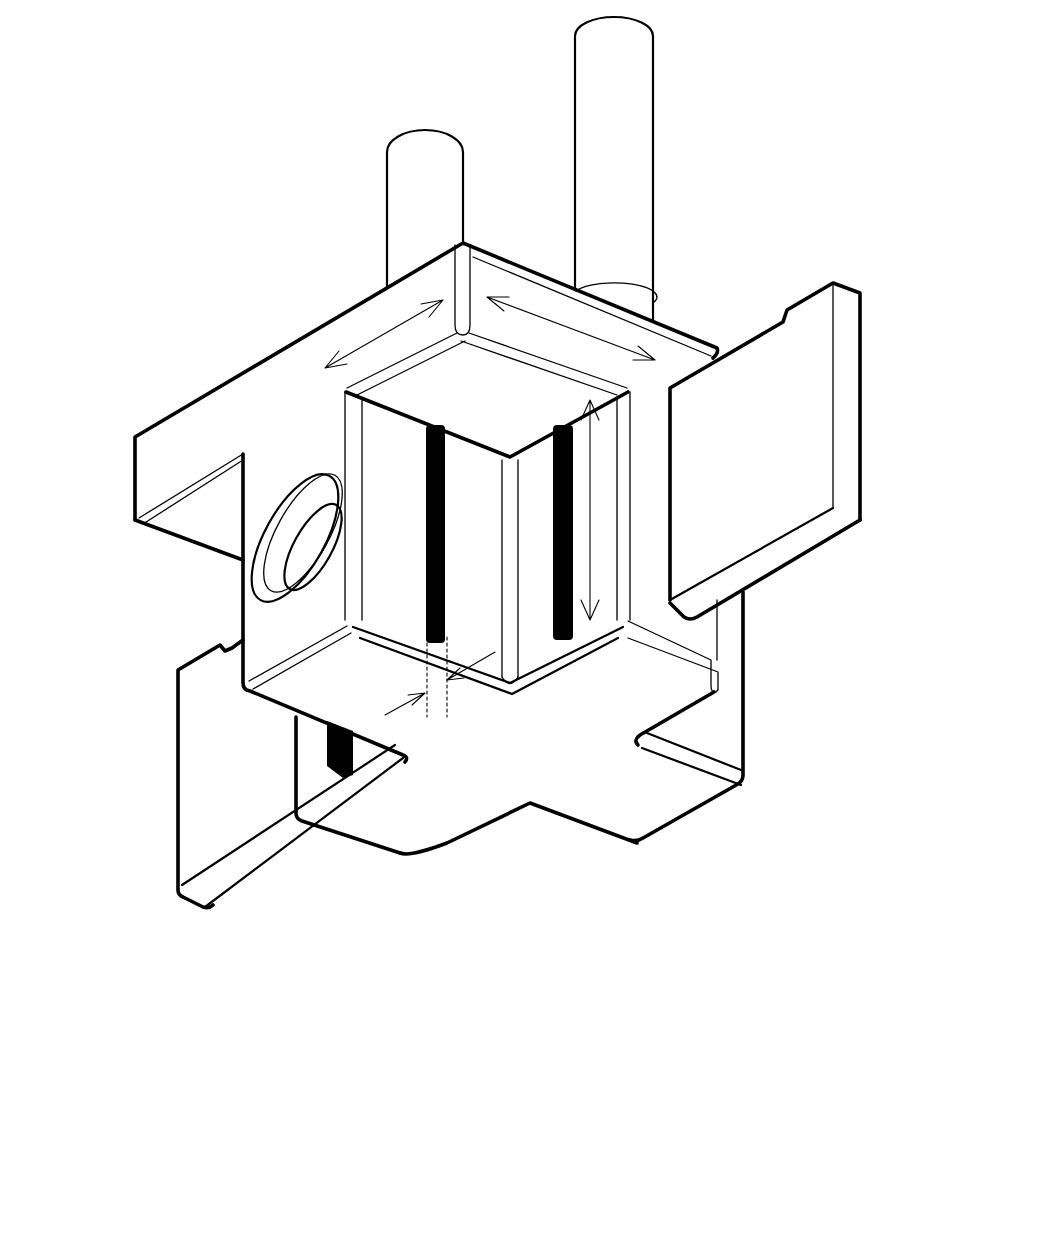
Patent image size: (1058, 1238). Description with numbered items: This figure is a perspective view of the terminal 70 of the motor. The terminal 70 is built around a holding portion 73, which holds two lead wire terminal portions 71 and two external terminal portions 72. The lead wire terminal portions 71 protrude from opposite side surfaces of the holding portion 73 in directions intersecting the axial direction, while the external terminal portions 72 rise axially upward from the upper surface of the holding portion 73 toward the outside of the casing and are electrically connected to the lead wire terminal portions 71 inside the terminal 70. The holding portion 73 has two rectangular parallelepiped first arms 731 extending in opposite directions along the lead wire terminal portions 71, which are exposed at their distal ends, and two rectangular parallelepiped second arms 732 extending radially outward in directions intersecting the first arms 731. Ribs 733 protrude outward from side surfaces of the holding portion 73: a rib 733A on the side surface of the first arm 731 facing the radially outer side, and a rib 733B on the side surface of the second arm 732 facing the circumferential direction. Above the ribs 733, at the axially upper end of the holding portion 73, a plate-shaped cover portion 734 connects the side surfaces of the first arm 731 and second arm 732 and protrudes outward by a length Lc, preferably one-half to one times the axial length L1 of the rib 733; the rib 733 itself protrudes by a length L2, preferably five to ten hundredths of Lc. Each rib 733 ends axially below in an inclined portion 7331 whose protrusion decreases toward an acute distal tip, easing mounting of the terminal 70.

The terminal 70 is at (216, 104).
The lead wire terminal portion 71 is at (176, 723).
The external terminal portion 72 is at (405, 128).
The holding portion 73 is at (255, 327).
The first arm 731 is at (293, 775).
The second arm 732 is at (241, 588).
The rib 733 is at (628, 912).
The rib 733A is at (540, 593).
The rib 733B is at (463, 592).
The inclined portion 7331 is at (530, 668).
The cover portion 734 is at (523, 265).
The protruding length of the cover portion Lc is at (373, 330).
The length of the rib L1 is at (597, 517).
The protruding length of the rib L2 is at (478, 725).